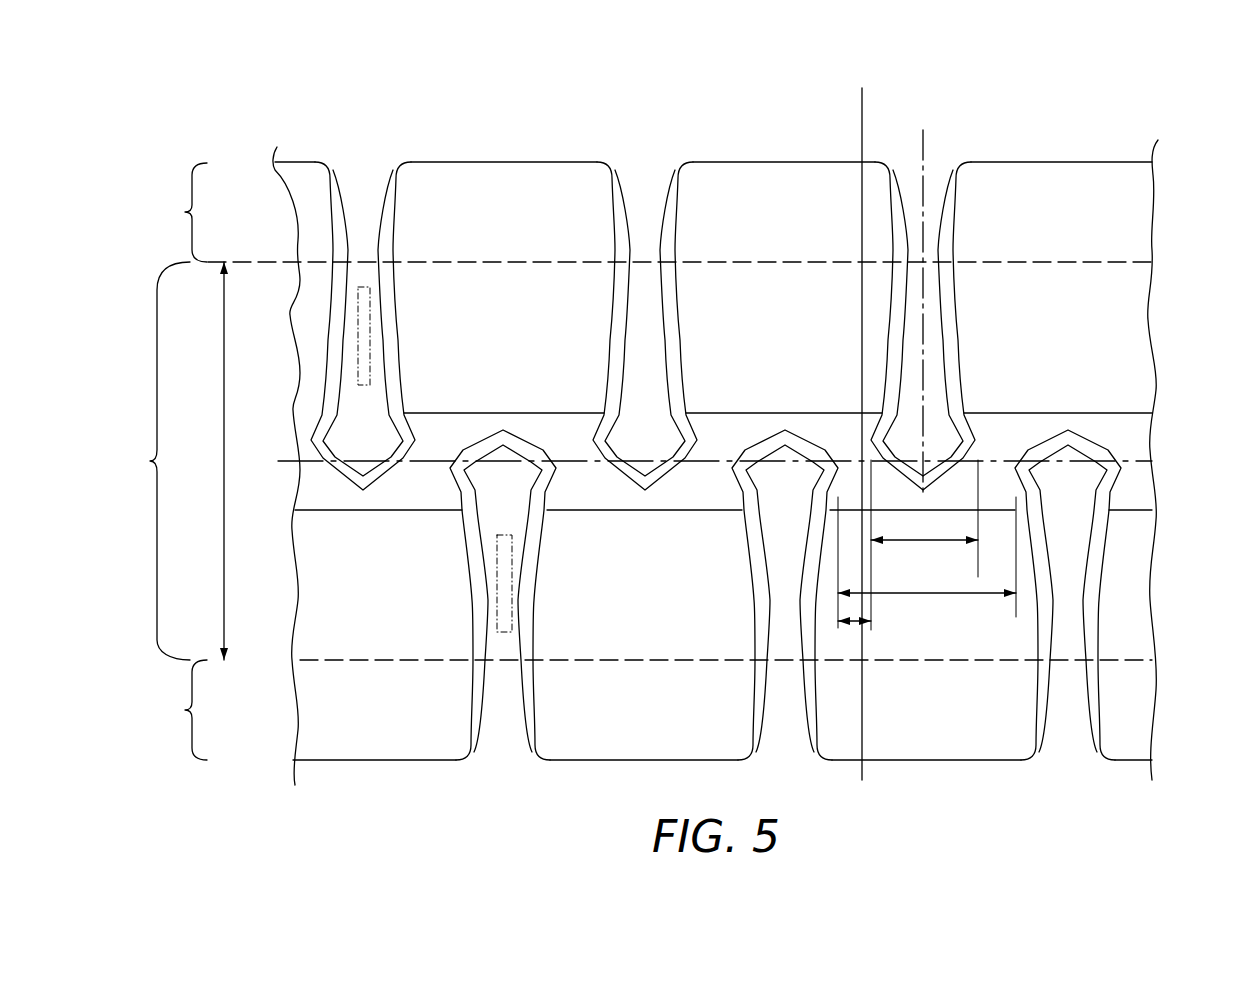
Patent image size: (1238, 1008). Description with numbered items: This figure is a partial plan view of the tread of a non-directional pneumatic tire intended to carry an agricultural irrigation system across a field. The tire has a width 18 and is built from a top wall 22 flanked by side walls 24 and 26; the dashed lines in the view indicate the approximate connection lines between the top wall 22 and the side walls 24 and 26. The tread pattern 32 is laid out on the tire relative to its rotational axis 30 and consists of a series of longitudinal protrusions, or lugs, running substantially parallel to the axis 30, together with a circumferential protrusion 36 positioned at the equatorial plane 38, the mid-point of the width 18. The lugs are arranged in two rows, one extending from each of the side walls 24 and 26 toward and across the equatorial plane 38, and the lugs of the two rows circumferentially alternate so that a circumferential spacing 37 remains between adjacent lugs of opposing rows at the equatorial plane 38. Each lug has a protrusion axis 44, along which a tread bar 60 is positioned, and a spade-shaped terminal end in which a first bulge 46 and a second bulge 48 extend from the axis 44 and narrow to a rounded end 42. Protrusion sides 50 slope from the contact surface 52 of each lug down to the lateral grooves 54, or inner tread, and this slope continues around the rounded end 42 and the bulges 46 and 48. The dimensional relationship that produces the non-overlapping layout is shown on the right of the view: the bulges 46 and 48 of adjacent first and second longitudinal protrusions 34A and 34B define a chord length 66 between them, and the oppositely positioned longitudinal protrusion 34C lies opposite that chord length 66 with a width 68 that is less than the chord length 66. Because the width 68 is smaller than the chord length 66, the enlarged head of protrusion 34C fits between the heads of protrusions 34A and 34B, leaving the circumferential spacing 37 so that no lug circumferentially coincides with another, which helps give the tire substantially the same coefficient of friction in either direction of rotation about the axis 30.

The width 18 is at (224, 378).
The top wall 22 is at (150, 461).
The side wall 24 is at (185, 212).
The side wall 26 is at (185, 710).
The rotational axis 30 is at (866, 92).
The tread pattern 32 is at (1138, 120).
The first longitudinal protrusion 34A is at (783, 762).
The second longitudinal protrusion 34B is at (1065, 762).
The longitudinal protrusion 34C is at (910, 168).
The circumferential protrusion 36 is at (1134, 428).
The circumferential spacing 37 is at (856, 626).
The equatorial plane 38 is at (1165, 460).
The rounded end 42 is at (780, 425).
The protrusion axis 44 is at (930, 160).
The first bulge 46 is at (584, 426).
The second bulge 48 is at (703, 426).
The protrusion side 50 is at (345, 314).
The contact surface 52 is at (643, 344).
The lateral groove 54 is at (482, 187).
The tread bar 60 is at (495, 604).
The chord length 66 is at (918, 593).
The width 68 is at (915, 540).